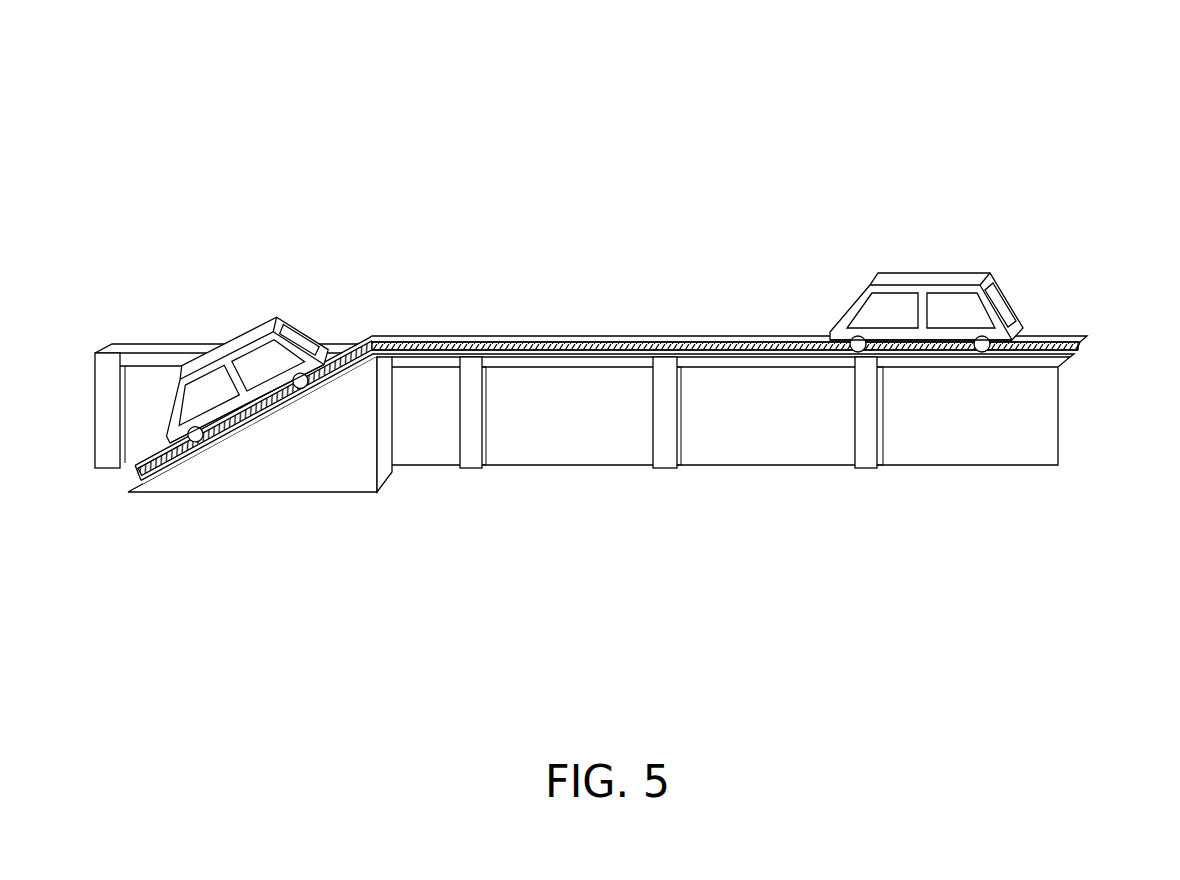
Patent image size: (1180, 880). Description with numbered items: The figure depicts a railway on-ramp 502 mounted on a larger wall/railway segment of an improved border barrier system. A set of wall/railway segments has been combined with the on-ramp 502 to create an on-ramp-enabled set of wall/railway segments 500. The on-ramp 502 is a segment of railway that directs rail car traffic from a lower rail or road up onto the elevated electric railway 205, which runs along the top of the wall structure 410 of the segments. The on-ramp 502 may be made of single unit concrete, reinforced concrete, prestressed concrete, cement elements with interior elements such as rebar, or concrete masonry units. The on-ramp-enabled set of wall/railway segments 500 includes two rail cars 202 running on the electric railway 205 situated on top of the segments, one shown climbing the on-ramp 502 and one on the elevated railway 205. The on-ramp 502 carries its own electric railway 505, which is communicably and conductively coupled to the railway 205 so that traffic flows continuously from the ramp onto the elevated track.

The on-ramp-enabled set of wall/railway segments 500 is at (619, 309).
The rail car 202 is at (280, 316).
The electric railway 205 is at (560, 335).
The elevated guideway / deck 410 is at (1058, 430).
The on-ramp 502 is at (328, 491).
The electric railway 505 is at (350, 345).